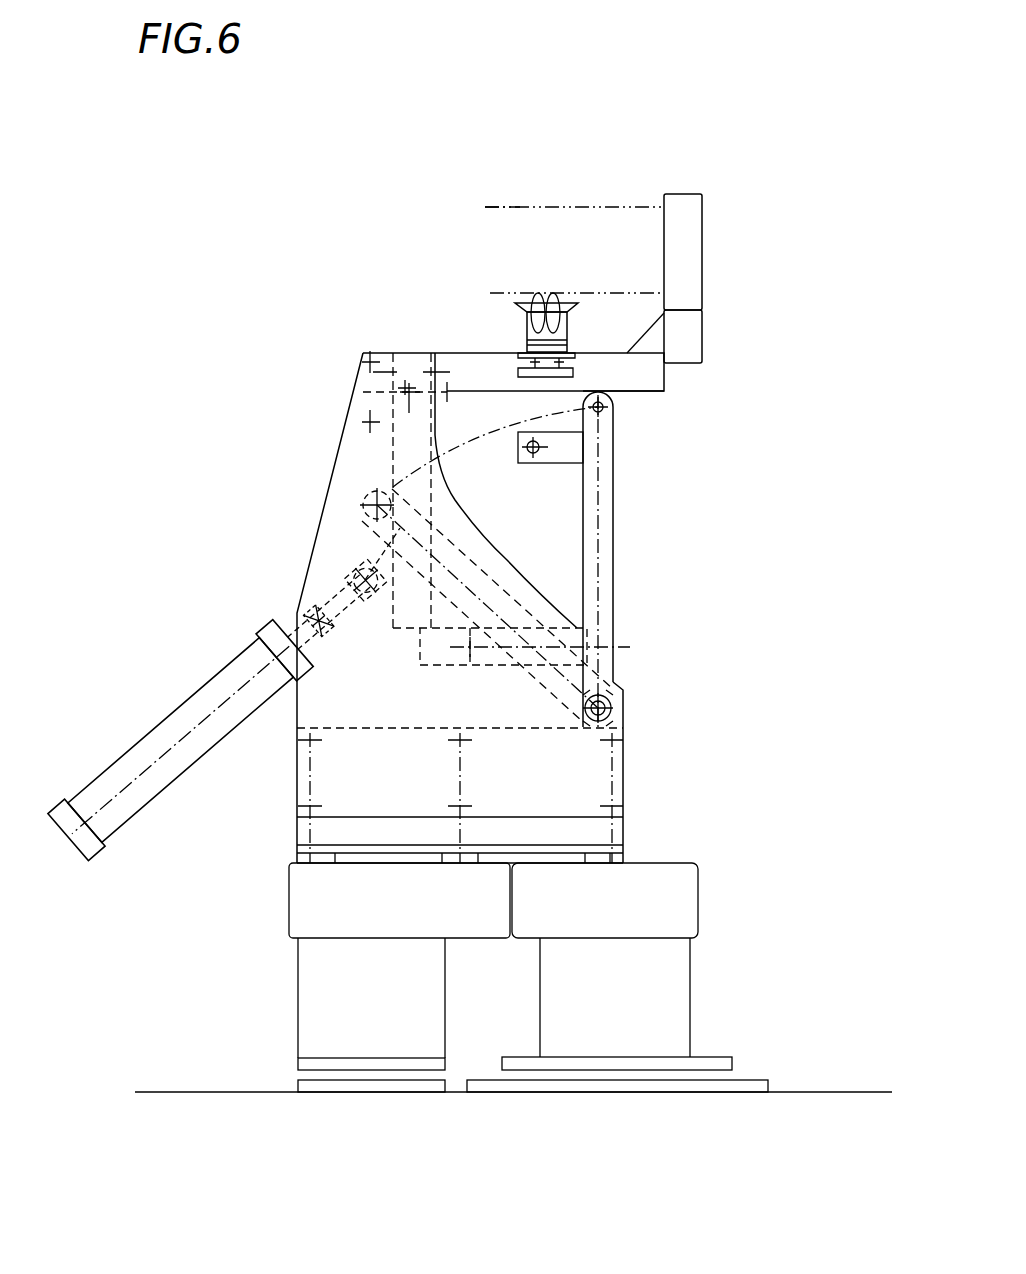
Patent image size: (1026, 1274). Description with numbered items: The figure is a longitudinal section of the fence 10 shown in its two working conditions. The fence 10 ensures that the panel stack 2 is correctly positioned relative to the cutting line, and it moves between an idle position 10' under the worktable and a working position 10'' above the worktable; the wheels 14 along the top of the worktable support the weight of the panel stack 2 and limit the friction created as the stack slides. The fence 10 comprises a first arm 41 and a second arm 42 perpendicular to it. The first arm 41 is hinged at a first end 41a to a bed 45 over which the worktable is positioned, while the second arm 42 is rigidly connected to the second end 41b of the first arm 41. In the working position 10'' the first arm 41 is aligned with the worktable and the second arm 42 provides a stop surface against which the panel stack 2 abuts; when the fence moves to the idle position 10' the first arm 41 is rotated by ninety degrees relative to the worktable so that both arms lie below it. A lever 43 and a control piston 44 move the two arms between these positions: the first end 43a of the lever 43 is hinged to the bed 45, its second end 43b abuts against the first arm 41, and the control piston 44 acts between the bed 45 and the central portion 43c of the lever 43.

The panel stack 2 is at (526, 217).
The wheels 14 is at (530, 308).
The first arm 41 is at (453, 353).
The first end of the first arm 41a is at (409, 387).
The second end of the first arm 41b is at (648, 373).
The second arm 42 is at (686, 292).
The lever 43 is at (613, 590).
The first end of the lever 43a is at (612, 710).
The second end of the lever 43b is at (605, 410).
The central portion of the lever 43c is at (608, 502).
The control piston 44 is at (228, 687).
The bed 45 is at (342, 700).
The fence 10 is at (670, 289).
The idle position 10' is at (611, 665).
The working position 10'' is at (737, 236).